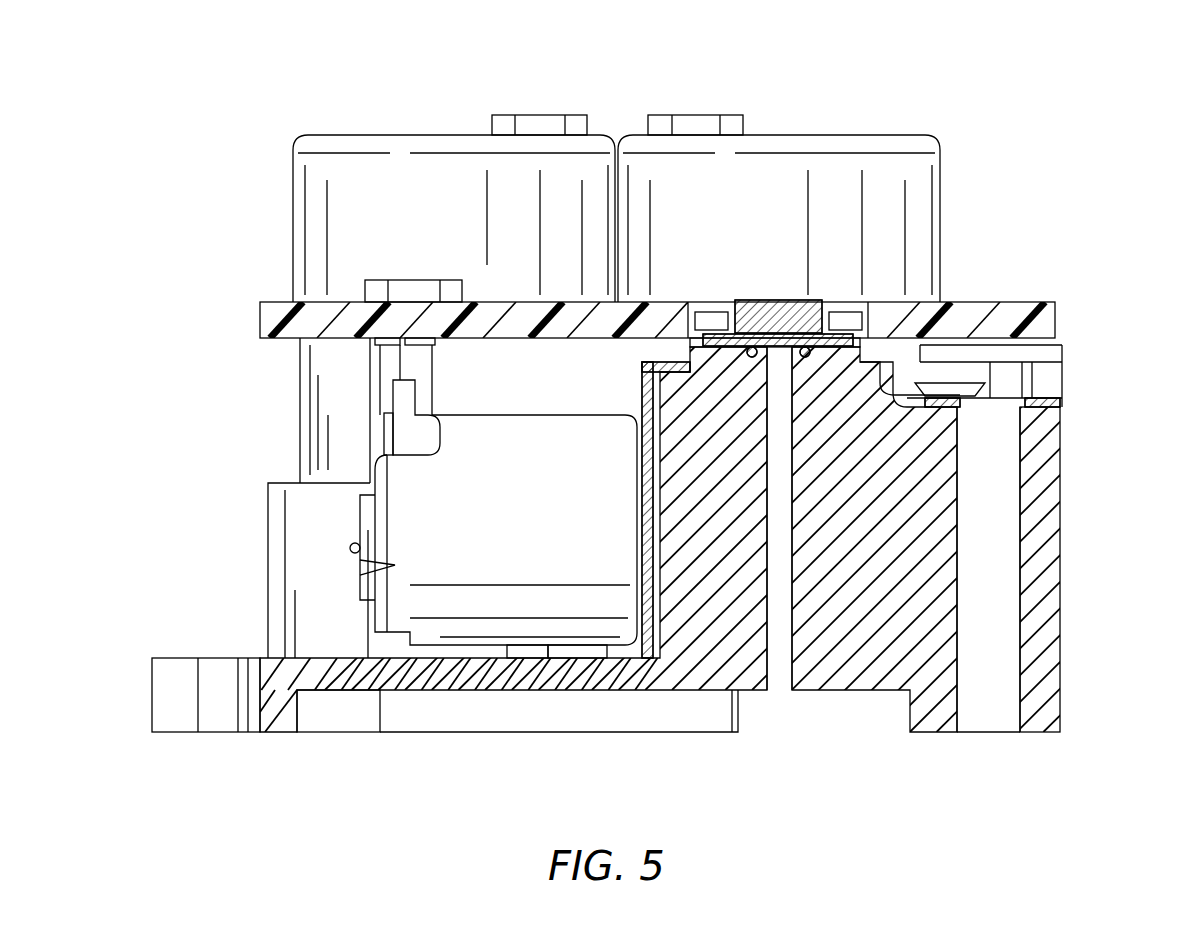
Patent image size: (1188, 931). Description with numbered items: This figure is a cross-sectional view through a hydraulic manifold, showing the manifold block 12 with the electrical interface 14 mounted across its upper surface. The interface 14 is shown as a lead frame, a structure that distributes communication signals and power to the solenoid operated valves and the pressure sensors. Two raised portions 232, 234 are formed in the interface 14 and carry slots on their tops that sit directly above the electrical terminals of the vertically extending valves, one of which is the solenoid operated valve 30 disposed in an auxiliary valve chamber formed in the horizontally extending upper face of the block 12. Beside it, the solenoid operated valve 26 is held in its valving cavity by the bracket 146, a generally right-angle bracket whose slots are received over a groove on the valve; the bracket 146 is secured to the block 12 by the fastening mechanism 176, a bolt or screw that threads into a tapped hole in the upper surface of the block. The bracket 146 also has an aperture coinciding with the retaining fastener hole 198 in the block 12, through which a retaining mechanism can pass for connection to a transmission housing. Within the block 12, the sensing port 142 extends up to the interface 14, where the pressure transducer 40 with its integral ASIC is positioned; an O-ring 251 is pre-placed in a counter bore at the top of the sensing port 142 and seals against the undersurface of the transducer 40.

The manifold block 12 is at (850, 692).
The electrical interface 14 is at (270, 298).
The solenoid operated valve 26 is at (483, 602).
The solenoid operated valve 30 is at (300, 393).
The pressure transducer 40 is at (752, 300).
The sensing port 142 is at (778, 645).
The bracket 146 is at (640, 393).
The fastening mechanism 176 is at (948, 387).
The retaining fastener hole 198 is at (960, 557).
The raised portion 232 is at (313, 205).
The raised portion 234 is at (927, 218).
The O-ring 251 is at (802, 358).